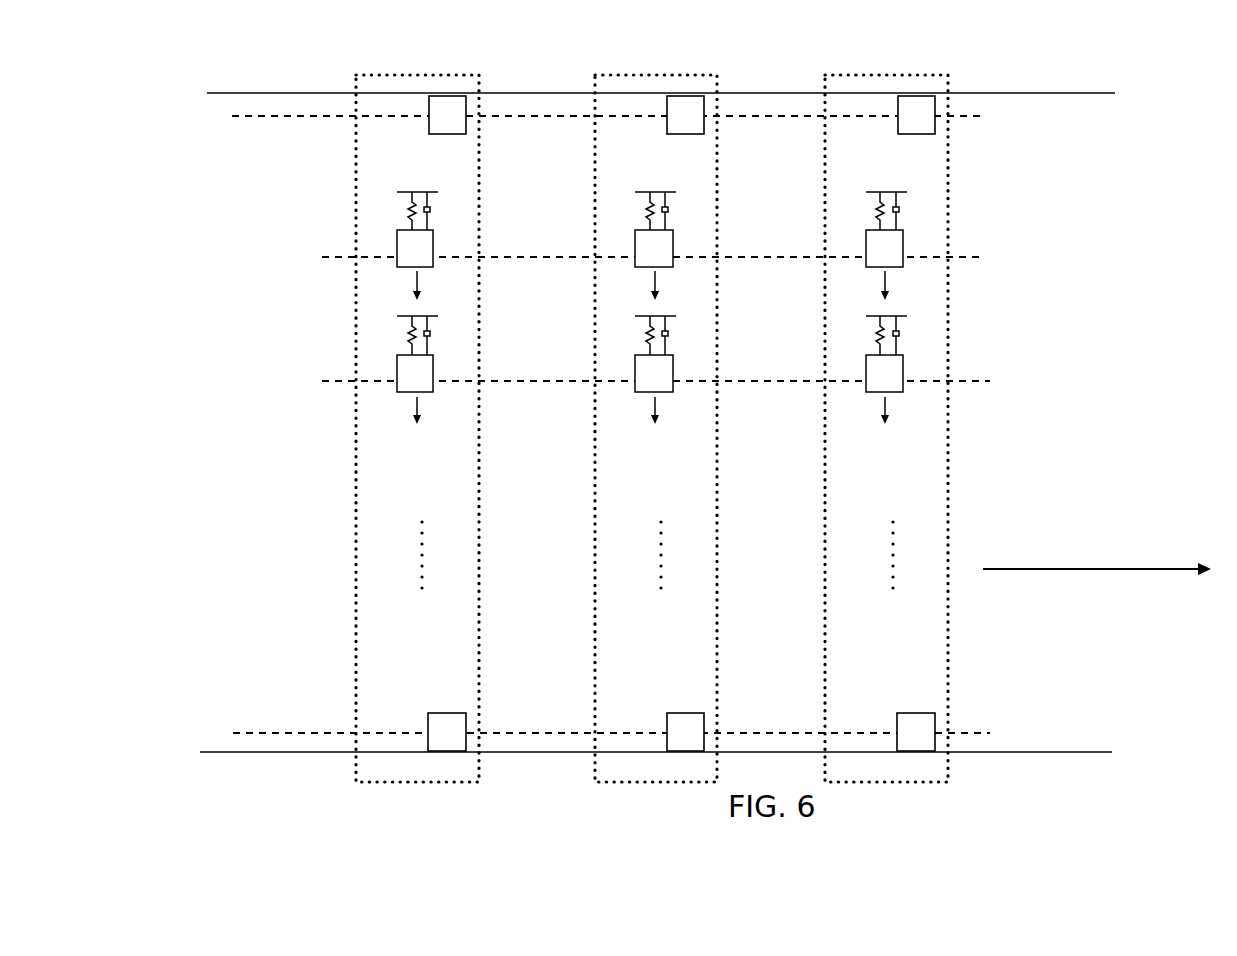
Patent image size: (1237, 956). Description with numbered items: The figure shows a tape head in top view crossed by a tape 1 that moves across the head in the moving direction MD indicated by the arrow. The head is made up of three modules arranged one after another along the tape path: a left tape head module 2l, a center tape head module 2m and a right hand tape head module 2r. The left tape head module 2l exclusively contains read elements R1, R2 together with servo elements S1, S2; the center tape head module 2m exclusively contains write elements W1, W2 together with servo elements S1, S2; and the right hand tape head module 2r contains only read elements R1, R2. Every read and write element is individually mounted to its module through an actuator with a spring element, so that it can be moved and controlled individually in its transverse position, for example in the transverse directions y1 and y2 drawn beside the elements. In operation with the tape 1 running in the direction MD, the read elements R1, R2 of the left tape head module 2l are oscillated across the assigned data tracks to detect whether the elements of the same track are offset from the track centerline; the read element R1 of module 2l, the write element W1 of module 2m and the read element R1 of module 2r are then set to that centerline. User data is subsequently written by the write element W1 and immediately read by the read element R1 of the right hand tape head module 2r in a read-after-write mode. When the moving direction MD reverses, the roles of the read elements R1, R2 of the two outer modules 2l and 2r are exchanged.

The tape 1 is at (267, 666).
The left tape head module 2l is at (348, 554).
The center tape head module 2m is at (595, 577).
The right hand tape head module 2r is at (825, 578).
The servo element S1 is at (427, 116).
The servo element S2 is at (428, 733).
The read element R1 is at (414, 267).
The read element R2 is at (410, 393).
The write element W1 is at (674, 250).
The write element W2 is at (674, 392).
The transverse direction y1 is at (525, 257).
The transverse direction y2 is at (525, 381).
The moving direction MD is at (1097, 547).